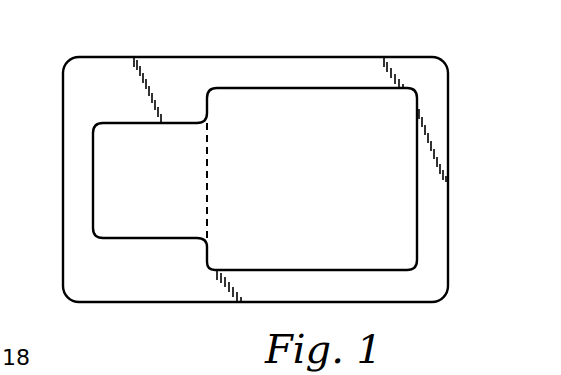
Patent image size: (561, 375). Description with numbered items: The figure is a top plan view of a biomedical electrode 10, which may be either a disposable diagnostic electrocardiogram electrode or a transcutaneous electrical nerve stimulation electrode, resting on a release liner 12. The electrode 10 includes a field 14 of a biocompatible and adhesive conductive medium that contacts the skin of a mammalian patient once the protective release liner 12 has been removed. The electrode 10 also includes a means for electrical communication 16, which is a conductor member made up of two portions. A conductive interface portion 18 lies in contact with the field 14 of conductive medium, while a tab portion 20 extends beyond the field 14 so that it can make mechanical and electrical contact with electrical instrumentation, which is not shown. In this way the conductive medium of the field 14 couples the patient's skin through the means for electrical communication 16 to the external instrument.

The electrode 10 is at (263, 173).
The release liner 12 is at (433, 80).
The field of conductive medium 14 is at (205, 205).
The means for electrical communication 16 is at (405, 211).
The conductive interface portion 18 is at (222, 252).
The tab portion 20 is at (103, 188).